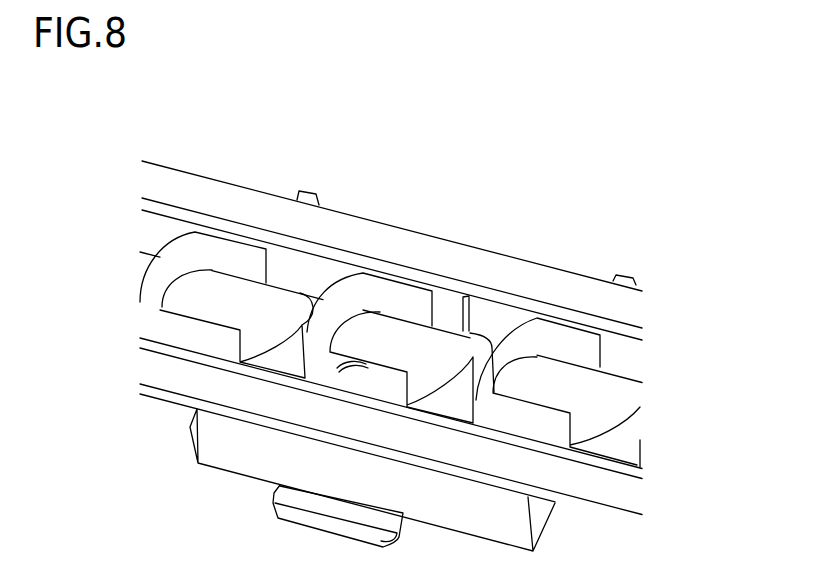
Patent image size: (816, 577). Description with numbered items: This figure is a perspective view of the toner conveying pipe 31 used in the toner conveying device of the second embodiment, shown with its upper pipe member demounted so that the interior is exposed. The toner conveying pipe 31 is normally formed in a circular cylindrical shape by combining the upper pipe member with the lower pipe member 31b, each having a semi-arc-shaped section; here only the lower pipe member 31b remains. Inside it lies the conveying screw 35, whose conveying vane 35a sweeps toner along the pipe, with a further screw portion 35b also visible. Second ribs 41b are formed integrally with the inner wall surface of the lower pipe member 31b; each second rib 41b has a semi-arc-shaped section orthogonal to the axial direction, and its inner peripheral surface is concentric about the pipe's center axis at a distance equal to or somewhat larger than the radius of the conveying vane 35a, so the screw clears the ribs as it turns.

The toner conveying pipe 31 is at (557, 172).
The lower pipe member 31b is at (563, 267).
The conveying screw 35 is at (372, 128).
The conveying vane 35a is at (243, 262).
The roller front portion 35b is at (293, 303).
The second rib 41b is at (468, 297).